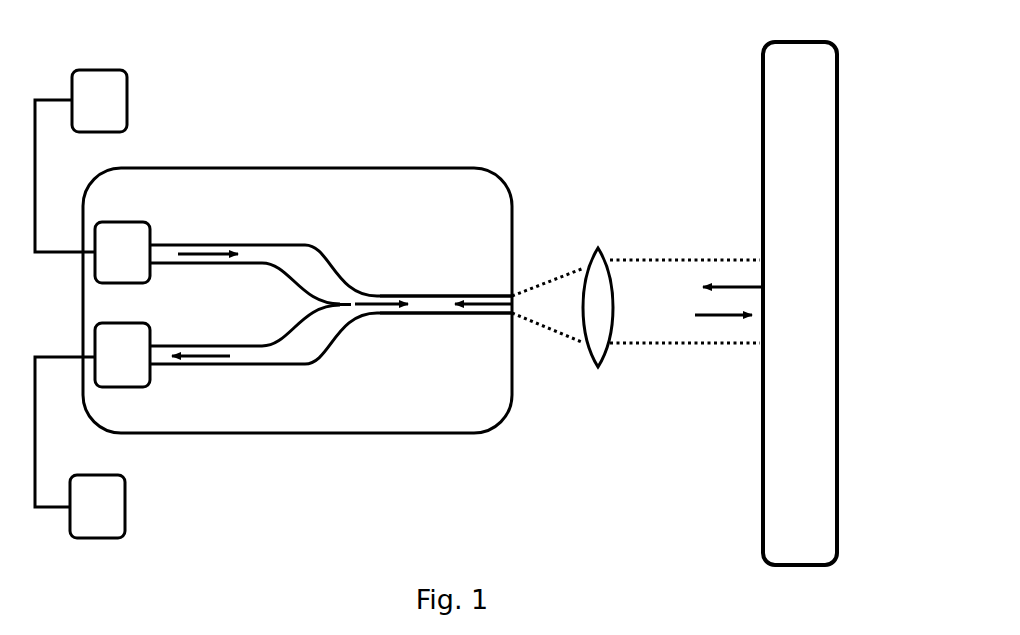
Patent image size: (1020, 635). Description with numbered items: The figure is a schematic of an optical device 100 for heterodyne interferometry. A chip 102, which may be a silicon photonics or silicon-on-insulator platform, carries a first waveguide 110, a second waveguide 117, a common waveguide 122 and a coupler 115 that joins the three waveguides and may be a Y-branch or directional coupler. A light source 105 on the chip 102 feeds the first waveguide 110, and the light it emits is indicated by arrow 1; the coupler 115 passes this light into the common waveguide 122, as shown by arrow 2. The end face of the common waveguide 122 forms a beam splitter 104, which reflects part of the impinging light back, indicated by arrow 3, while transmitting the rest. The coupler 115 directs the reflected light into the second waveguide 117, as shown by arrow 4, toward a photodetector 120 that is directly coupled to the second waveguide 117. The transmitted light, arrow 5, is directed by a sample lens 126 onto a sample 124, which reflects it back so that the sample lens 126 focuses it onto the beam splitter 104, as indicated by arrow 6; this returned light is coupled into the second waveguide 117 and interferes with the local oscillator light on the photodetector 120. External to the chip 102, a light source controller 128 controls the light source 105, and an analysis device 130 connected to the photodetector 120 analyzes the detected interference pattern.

The optical device 100 is at (297, 221).
The chip 102 is at (297, 300).
The beam splitter 104 is at (516, 324).
The light source 105 is at (130, 222).
The first waveguide 110 is at (267, 245).
The coupler 115 is at (352, 334).
The second waveguide 117 is at (300, 364).
The photodetector 120 is at (138, 387).
The common waveguide 122 is at (437, 313).
The sample 124 is at (763, 522).
The sample lens 126 is at (595, 248).
The light source controller 128 is at (100, 70).
The analysis device 130 is at (95, 538).
The arrow 1 is at (208, 254).
The arrow 2 is at (380, 296).
The arrow 3 is at (472, 296).
The arrow 4 is at (265, 364).
The arrow 5 is at (715, 315).
The arrow 6 is at (735, 287).